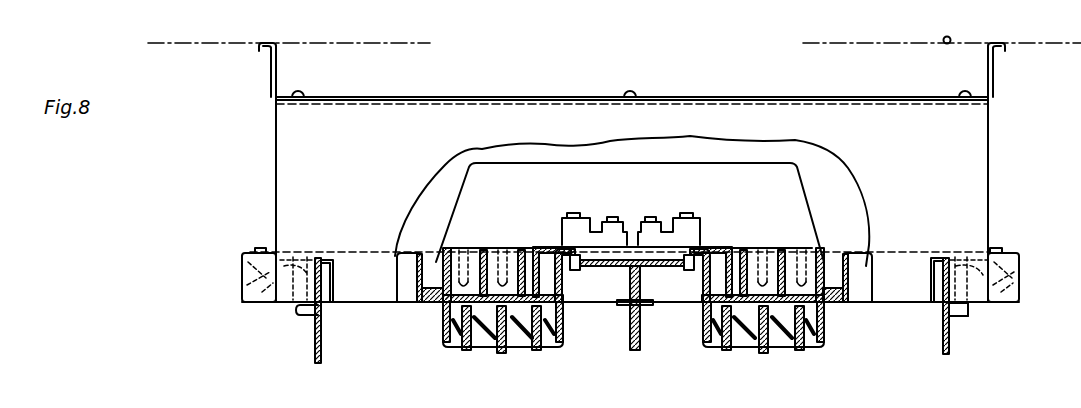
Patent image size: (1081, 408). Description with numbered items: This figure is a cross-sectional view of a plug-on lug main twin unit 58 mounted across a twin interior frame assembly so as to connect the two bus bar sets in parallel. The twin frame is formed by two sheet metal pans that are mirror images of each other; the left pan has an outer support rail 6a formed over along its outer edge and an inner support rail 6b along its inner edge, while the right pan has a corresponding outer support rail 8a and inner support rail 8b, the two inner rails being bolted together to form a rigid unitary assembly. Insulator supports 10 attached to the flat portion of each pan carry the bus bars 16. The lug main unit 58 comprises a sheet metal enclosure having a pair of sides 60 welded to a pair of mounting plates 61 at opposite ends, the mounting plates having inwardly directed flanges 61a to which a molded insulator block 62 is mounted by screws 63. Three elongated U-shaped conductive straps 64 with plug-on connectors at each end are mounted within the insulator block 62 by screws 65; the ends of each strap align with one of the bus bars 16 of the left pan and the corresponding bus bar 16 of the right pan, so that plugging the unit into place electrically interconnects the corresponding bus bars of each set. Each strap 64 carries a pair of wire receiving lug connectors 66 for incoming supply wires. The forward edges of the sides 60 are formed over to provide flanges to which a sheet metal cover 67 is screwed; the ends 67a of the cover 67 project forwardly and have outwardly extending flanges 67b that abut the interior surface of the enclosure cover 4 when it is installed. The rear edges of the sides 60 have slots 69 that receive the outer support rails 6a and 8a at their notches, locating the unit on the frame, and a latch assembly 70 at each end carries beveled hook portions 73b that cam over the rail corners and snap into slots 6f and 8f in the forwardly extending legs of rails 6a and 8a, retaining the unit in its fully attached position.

The cover 4 is at (352, 43).
The sheet metal cover 67 is at (455, 96).
The ends of cover 67a is at (270, 82).
The outwardly extending flanges 67b is at (262, 52).
The lug main twin unit 58 is at (507, 92).
The molded insulator block 62 is at (668, 163).
The sides 60 is at (745, 141).
The mounting plates 61 is at (350, 252).
The inwardly directed flanges 61a is at (422, 302).
The screws 63 is at (447, 262).
The conductive straps 64 is at (543, 245).
The screws 65 is at (574, 268).
The wire receiving lug connectors 66 is at (675, 218).
The latch assembly 70 is at (238, 262).
The hook 73b is at (296, 318).
The slots 69 is at (329, 296).
The outer support rail 6a is at (315, 350).
The slots 6f is at (322, 318).
The inner support rail 6b is at (628, 340).
The outer support rail 8a is at (951, 344).
The inner support rail 8b is at (641, 340).
The slots 8f is at (952, 320).
The insulator supports 10 is at (443, 338).
The bus bars 16 is at (512, 350).